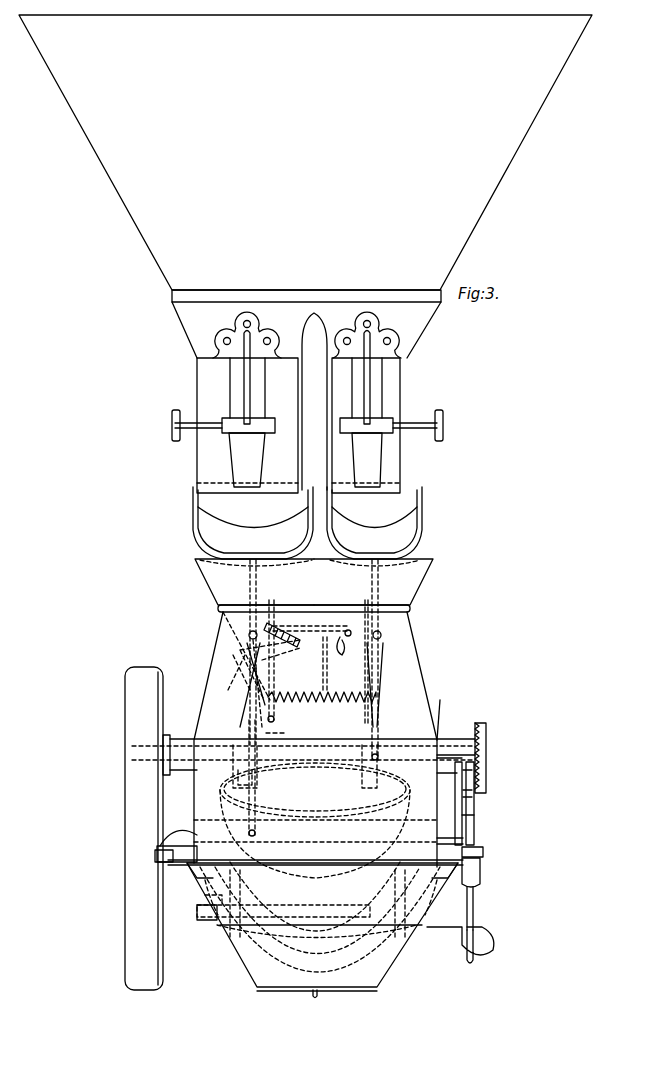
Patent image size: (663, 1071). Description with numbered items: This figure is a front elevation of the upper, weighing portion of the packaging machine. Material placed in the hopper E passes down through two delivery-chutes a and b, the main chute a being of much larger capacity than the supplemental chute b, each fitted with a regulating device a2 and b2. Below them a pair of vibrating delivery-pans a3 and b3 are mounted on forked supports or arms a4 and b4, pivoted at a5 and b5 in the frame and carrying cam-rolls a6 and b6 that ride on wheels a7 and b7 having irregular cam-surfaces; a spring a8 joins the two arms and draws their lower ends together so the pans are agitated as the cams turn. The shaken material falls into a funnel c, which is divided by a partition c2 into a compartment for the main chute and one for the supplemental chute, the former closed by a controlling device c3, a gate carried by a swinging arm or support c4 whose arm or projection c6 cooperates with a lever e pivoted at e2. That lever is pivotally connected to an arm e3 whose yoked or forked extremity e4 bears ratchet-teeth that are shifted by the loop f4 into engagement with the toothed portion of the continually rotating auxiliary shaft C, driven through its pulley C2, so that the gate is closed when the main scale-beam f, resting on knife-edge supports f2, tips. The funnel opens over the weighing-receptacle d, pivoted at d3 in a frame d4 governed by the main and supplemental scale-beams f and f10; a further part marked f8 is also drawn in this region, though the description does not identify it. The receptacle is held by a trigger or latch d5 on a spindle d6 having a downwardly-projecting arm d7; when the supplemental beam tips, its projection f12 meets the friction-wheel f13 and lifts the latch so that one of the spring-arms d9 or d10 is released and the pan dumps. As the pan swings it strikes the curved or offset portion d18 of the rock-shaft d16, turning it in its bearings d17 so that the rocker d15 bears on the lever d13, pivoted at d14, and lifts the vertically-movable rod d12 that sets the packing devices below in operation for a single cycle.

The hopper E is at (305, 186).
The delivery-chute a is at (197, 470).
The regulating device a2 is at (240, 453).
The vibrating delivery-pan a3 is at (196, 512).
The forked support or arm a4 is at (248, 590).
The pivot a5 is at (249, 635).
The cam-roll a6 is at (247, 757).
The cam wheel a7 is at (275, 720).
The spring a8 is at (355, 692).
The delivery-chute b is at (400, 453).
The regulating device b2 is at (376, 473).
The vibrating delivery-pan b3 is at (410, 500).
The forked support or arm b4 is at (380, 589).
The pivot b5 is at (381, 635).
The cam-roll b6 is at (377, 755).
The cam wheel b7 is at (364, 724).
The auxiliary shaft C is at (132, 750).
The pulley C2 is at (124, 698).
The funnel c is at (290, 628).
The partition c2 is at (347, 652).
The controlling device c3 is at (233, 660).
The swinging arm or support c4 is at (282, 655).
The arm or projection c6 is at (282, 622).
The lever e is at (318, 626).
The pivot e2 is at (349, 630).
The arm e3 is at (322, 676).
The yoked or forked extremity e4 is at (286, 733).
The weighing-receptacle d is at (220, 795).
The pivotal support d3 is at (475, 815).
The frame d4 is at (481, 868).
The trigger or latch d5 is at (479, 723).
The pivotal support or spindle d6 is at (445, 738).
The downwardly-projecting arm d7 is at (474, 780).
The spring-arm d9 is at (462, 765).
The spring-arm d10 is at (375, 975).
The vertically-movable rod d12 is at (338, 958).
The lever d13 is at (198, 920).
The pivot d14 is at (280, 950).
The rocker d15 is at (204, 900).
The rock-shaft d16 is at (443, 942).
The bearings d17 is at (426, 905).
The curved or offset portion d18 is at (235, 965).
The main scale-beam f is at (160, 837).
The knife-edge supports f2 is at (483, 851).
The loop f4 is at (248, 722).
The pin f8 is at (282, 781).
The supplemental scale-beam f10 is at (338, 905).
The projection f12 is at (473, 797).
The friction-wheel f13 is at (472, 771).